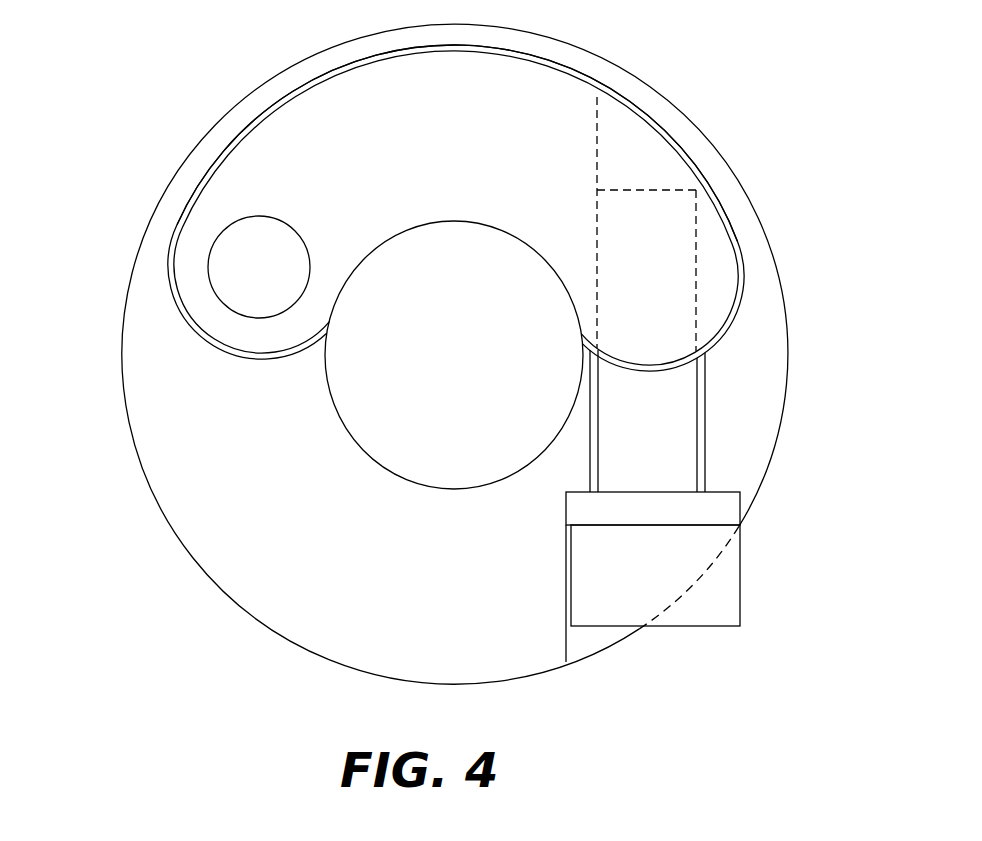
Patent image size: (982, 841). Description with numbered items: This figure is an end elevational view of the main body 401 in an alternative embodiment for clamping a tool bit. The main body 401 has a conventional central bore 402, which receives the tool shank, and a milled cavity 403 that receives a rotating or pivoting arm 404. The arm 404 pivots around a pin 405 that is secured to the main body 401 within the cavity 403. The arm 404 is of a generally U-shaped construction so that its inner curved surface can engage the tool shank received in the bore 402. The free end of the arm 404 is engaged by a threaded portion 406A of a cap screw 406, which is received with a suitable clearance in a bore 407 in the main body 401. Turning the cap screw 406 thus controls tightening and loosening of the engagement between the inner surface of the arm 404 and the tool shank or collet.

The main body 401 is at (215, 592).
The central bore 402 is at (428, 493).
The milled cavity 403 is at (190, 330).
The arm 404 is at (298, 132).
The pin 405 is at (207, 271).
The cap screw 406 is at (707, 627).
The threaded portion 406A is at (695, 233).
The bore 407 is at (703, 410).